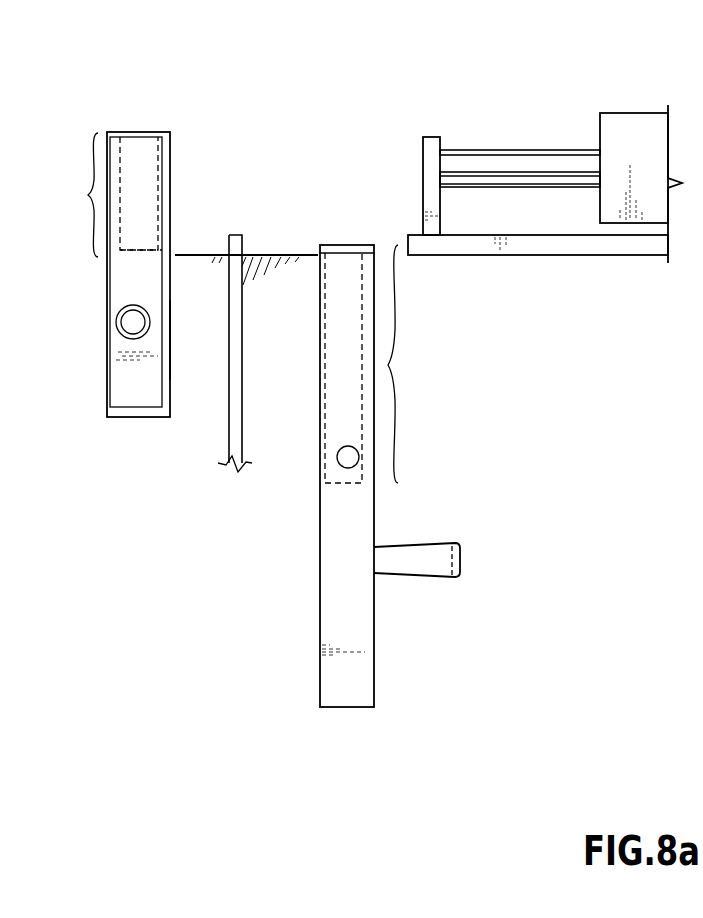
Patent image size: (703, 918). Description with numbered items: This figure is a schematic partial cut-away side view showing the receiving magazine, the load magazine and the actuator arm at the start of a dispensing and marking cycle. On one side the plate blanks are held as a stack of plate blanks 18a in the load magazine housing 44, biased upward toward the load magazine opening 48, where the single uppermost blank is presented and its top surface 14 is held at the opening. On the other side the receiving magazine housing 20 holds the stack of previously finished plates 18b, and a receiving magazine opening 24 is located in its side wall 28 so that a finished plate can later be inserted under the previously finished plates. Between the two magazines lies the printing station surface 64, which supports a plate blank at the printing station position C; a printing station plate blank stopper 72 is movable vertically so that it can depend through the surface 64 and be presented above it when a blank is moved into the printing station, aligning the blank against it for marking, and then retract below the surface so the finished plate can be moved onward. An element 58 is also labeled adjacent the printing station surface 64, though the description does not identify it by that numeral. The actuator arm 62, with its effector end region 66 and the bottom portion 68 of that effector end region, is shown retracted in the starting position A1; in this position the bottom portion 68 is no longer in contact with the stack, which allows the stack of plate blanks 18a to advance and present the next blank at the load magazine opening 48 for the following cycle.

The top surface 14 is at (317, 247).
The stack of plate blanks 18a is at (422, 364).
The stack of previously finished plates 18b is at (65, 195).
The receiving magazine housing 20 is at (91, 342).
The receiving magazine opening 24 is at (165, 252).
The side wall 28 is at (174, 337).
The load magazine housing 44 is at (421, 505).
The load magazine opening 48 is at (337, 238).
The base plate 58 is at (318, 258).
The actuator arm 62 is at (540, 150).
The printing station surface 64 is at (205, 258).
The effector end region 66 is at (405, 243).
The bottom portion of the effector end region 68 is at (441, 258).
The printing station plate blank stopper 72 is at (230, 428).
The printing station position C is at (242, 172).
The start position A1 is at (552, 287).